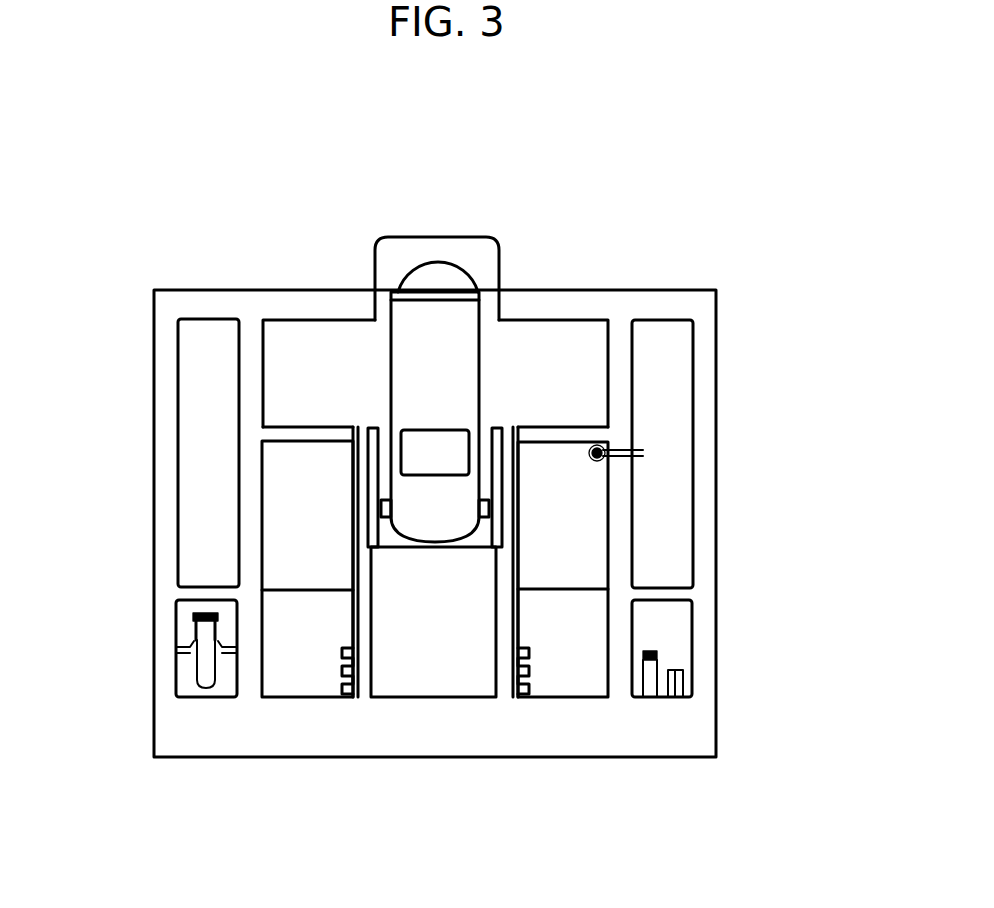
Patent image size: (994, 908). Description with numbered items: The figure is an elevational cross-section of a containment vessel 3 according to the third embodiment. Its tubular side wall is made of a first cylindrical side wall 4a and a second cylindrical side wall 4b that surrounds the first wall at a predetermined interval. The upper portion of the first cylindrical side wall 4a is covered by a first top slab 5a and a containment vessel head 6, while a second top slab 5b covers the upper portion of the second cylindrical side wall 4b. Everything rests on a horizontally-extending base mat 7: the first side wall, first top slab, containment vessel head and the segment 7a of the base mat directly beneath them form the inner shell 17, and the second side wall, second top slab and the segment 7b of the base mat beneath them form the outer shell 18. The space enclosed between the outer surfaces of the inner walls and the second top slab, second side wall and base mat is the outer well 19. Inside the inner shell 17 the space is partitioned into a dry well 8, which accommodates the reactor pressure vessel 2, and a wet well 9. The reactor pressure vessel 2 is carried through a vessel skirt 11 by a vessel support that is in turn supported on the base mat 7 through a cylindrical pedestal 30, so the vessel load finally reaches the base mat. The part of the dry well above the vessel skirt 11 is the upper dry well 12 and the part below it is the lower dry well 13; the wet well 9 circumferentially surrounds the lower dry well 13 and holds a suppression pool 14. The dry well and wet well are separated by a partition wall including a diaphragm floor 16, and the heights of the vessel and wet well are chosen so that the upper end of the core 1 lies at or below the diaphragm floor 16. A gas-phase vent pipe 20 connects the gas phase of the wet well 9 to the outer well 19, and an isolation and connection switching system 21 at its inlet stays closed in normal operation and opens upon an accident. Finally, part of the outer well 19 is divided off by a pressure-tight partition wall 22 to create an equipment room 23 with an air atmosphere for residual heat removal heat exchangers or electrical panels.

The core 1 is at (435, 452).
The reactor pressure vessel 2 is at (415, 388).
The holder 3 is at (270, 232).
The first cylindrical side wall 4a is at (248, 375).
The second cylindrical side wall 4b is at (165, 478).
The first top slab 5a is at (298, 303).
The second top slab 5b is at (205, 302).
The containment vessel head 6 is at (455, 237).
The base mat 7 is at (628, 784).
The segment of base mat 7a is at (488, 748).
The segment of base mat 7b is at (205, 747).
The dry well 8 is at (595, 350).
The wet well 9 is at (280, 522).
The vessel skirt 11 is at (385, 495).
The upper dry well 12 is at (588, 402).
The lower dry well 13 is at (418, 652).
The suppression pool 14 is at (292, 667).
The diaphragm floor 16 is at (300, 430).
The inner shell 17 is at (554, 278).
The outer shell 18 is at (669, 278).
The outer well 19 is at (660, 528).
The gas-phase vent pipe 20 is at (623, 460).
The isolation and connection switching system 21 is at (590, 452).
The pressure-tight partition wall 22 is at (653, 592).
The equipment room 23 is at (185, 612).
The cylindrical pedestal 30 is at (497, 543).